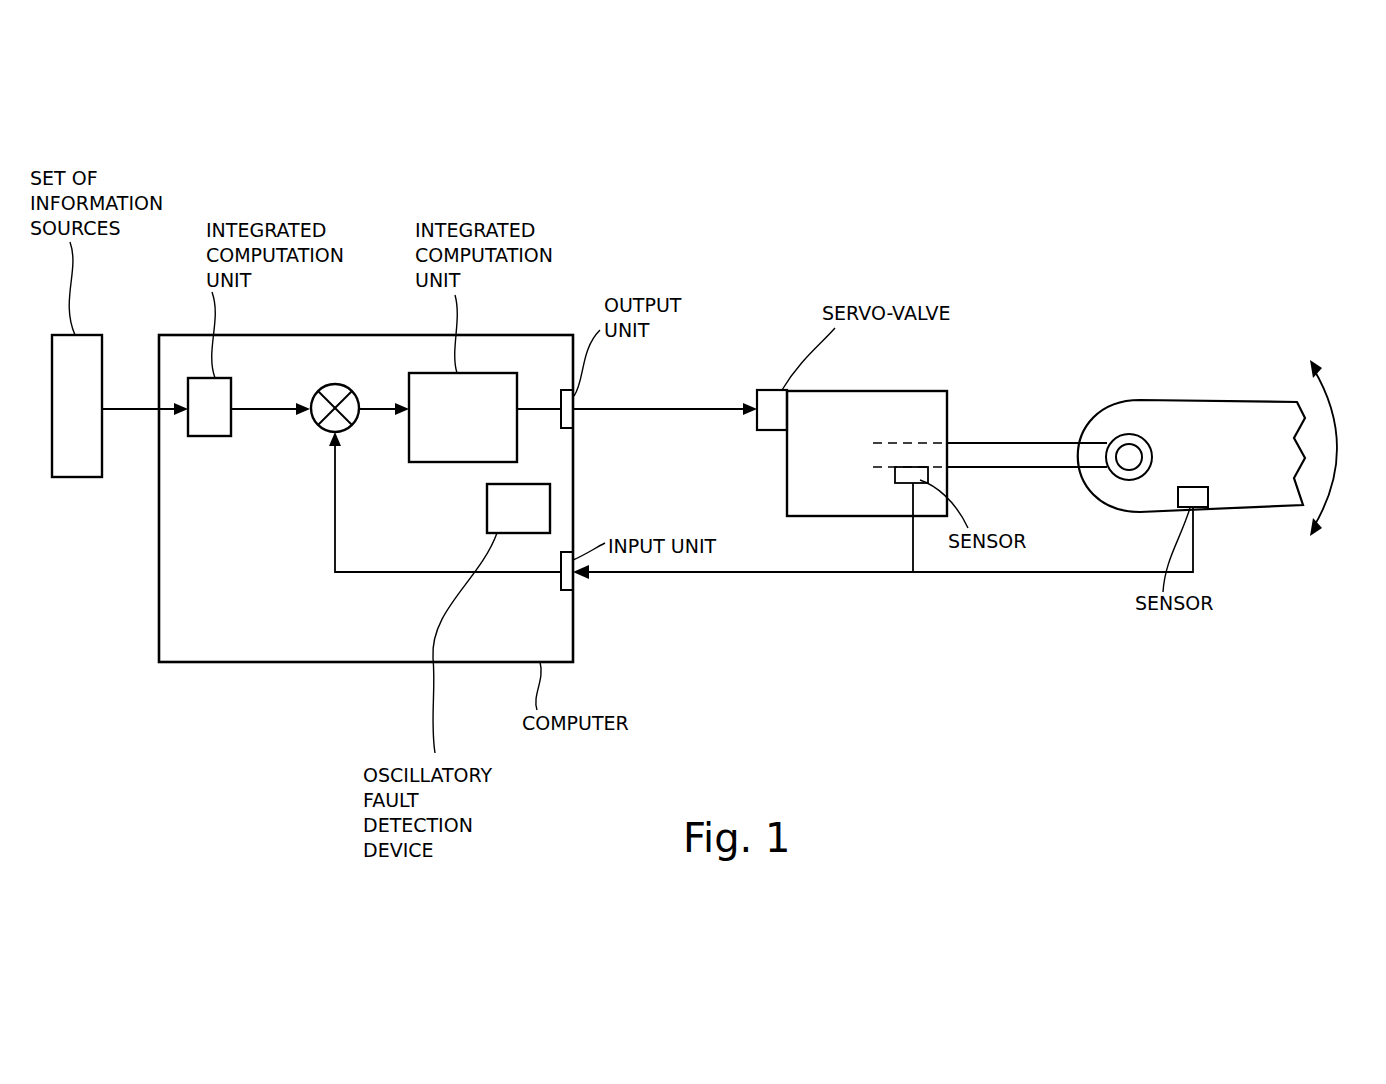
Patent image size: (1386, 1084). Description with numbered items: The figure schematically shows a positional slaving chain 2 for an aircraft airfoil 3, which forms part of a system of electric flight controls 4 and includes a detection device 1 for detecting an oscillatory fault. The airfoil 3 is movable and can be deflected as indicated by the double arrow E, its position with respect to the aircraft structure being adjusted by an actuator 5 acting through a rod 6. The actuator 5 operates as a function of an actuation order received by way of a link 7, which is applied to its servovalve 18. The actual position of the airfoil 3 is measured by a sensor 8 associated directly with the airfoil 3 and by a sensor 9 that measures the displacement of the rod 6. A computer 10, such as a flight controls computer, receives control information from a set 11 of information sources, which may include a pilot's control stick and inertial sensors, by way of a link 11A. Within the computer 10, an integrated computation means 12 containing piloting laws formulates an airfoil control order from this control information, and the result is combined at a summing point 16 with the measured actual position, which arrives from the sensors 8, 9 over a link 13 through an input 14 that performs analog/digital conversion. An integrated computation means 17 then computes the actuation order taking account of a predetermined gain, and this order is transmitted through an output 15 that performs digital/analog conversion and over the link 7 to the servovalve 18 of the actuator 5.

The detection device 1 is at (550, 507).
The positional slaving chain 2 is at (406, 580).
The airfoil 3 is at (1248, 512).
The system of electric flight controls 4 is at (911, 398).
The actuator 5 is at (832, 516).
The rod 6 is at (1040, 467).
The link 7 is at (663, 407).
The sensor 8 is at (1190, 507).
The sensor 9 is at (915, 476).
The computer 10 is at (498, 662).
The set of information sources 11 is at (80, 478).
The link 11A is at (122, 406).
The integrated computation means 12 is at (212, 438).
The link 13 is at (750, 575).
The input 14 is at (573, 580).
The output 15 is at (573, 420).
The summing junction 16 is at (318, 396).
The integrated computation means 17 is at (445, 462).
The servovalve 18 is at (770, 390).
The double arrow E is at (1337, 437).